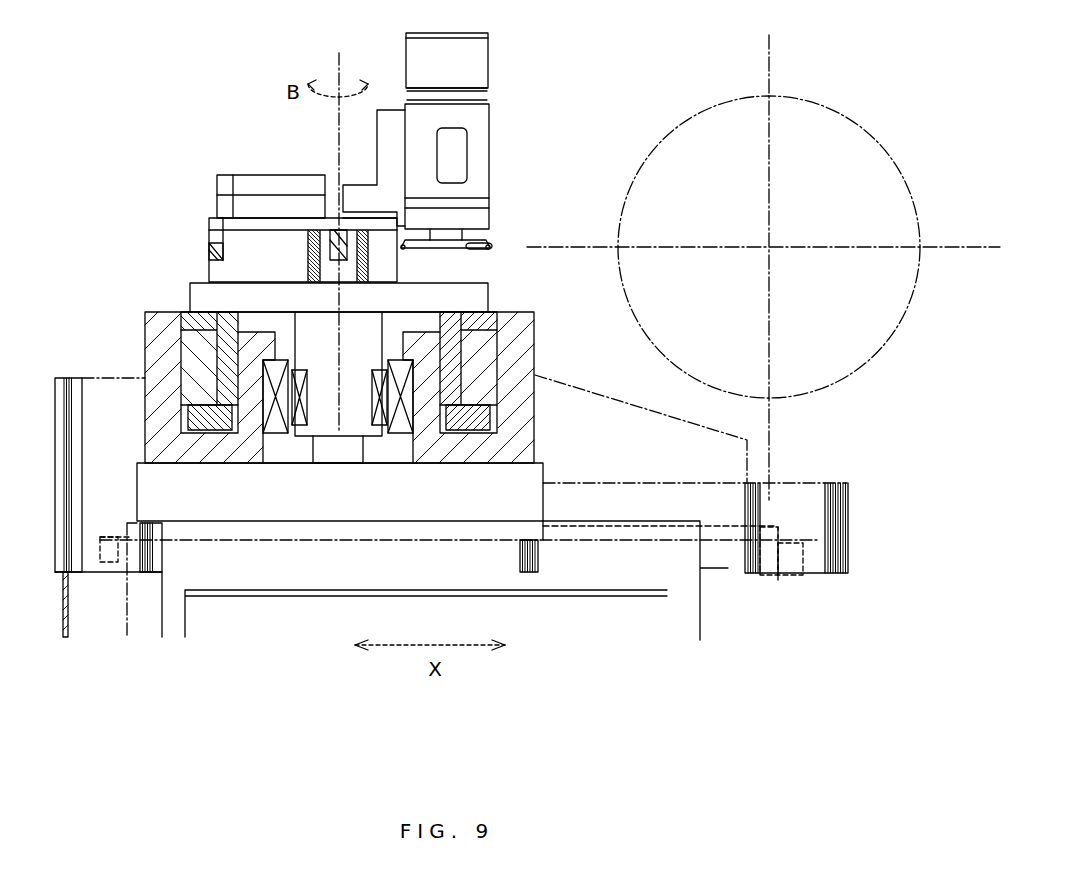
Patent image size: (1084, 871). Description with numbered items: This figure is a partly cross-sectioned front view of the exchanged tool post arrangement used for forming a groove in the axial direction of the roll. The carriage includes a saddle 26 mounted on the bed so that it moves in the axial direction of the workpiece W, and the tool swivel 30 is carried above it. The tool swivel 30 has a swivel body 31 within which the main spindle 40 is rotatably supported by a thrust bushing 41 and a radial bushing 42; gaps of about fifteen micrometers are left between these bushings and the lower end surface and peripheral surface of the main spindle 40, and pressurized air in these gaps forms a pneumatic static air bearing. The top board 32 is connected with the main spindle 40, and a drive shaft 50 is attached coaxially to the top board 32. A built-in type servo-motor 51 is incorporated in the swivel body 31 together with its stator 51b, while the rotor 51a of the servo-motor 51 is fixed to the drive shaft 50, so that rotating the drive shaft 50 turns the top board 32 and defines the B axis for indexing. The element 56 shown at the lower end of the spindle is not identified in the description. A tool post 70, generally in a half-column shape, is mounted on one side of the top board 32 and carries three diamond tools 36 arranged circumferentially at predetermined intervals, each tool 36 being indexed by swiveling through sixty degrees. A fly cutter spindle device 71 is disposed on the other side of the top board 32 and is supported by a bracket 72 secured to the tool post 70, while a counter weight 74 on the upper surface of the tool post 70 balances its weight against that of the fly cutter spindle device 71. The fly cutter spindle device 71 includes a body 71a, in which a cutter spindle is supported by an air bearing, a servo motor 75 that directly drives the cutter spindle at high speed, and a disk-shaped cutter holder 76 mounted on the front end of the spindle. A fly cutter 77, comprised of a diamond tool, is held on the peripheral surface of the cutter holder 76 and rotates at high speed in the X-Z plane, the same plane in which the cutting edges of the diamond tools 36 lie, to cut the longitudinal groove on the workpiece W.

The saddle 26 is at (665, 630).
The tool swivel 30 is at (352, 401).
The swivel body 31 is at (536, 331).
The top board 32 is at (201, 300).
The diamond tool 36 is at (206, 251).
The main spindle 40 is at (219, 446).
The thrust bushing 41 is at (187, 418).
The radial bushing 42 is at (197, 345).
The drive shaft 50 is at (351, 430).
The servo-motor 51 is at (359, 402).
The rotor 51a is at (376, 370).
The stator 51b is at (396, 362).
The spindle end 56 is at (326, 455).
The tool post 70 is at (261, 240).
The fly cutter spindle device 71 is at (495, 122).
The body 71a is at (478, 146).
The bracket 72 is at (390, 118).
The counter weight 74 is at (250, 181).
The servo motor 75 is at (478, 62).
The cutter holder 76 is at (452, 249).
The fly cutter 77 is at (488, 243).
The workpiece W is at (814, 97).